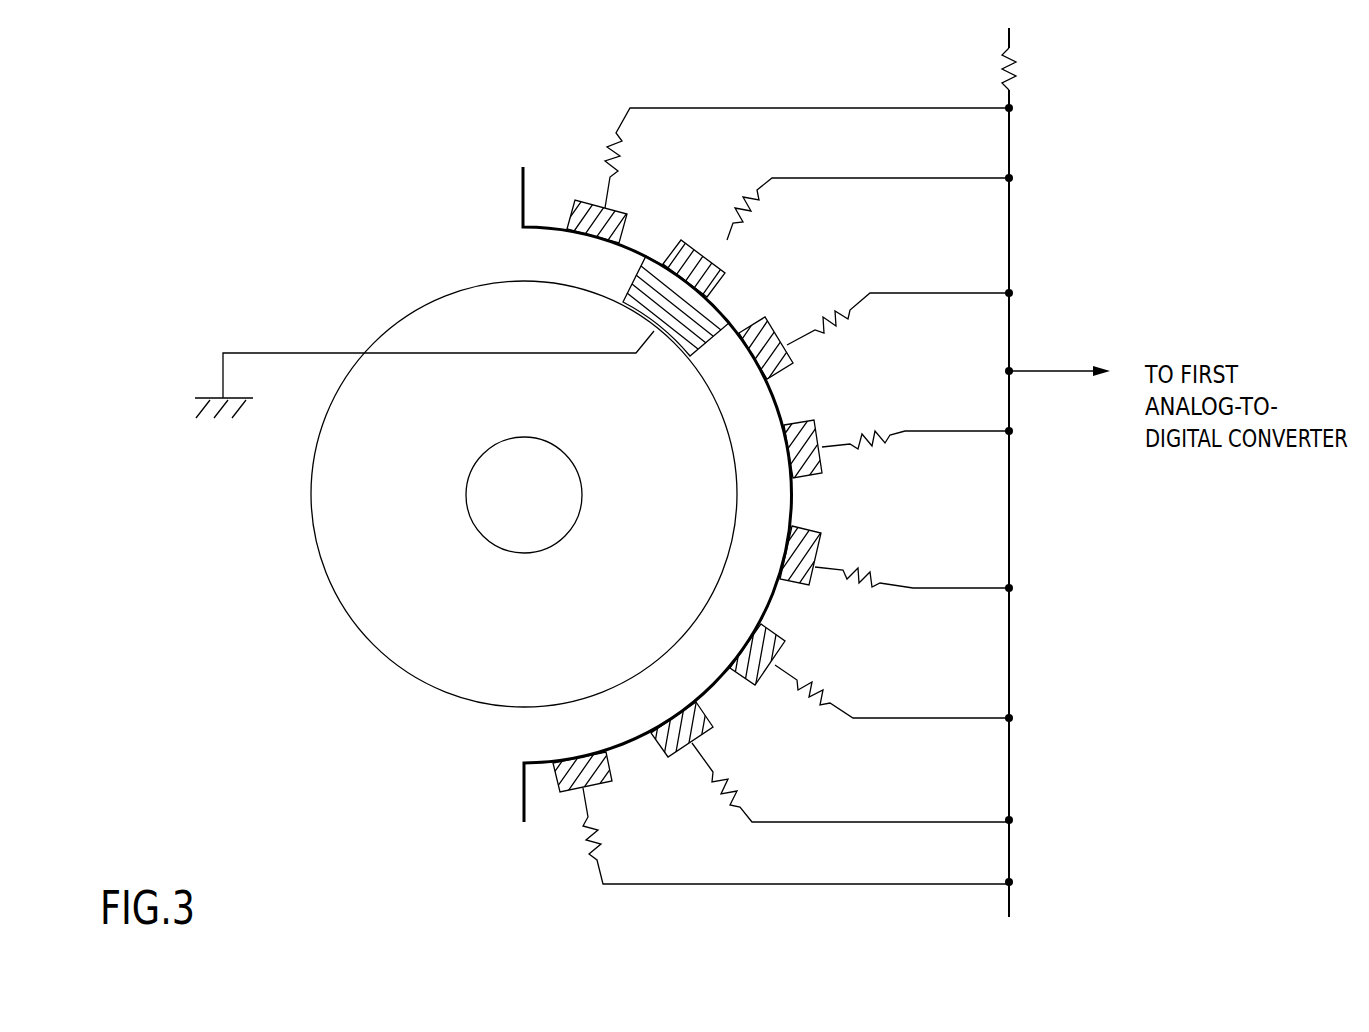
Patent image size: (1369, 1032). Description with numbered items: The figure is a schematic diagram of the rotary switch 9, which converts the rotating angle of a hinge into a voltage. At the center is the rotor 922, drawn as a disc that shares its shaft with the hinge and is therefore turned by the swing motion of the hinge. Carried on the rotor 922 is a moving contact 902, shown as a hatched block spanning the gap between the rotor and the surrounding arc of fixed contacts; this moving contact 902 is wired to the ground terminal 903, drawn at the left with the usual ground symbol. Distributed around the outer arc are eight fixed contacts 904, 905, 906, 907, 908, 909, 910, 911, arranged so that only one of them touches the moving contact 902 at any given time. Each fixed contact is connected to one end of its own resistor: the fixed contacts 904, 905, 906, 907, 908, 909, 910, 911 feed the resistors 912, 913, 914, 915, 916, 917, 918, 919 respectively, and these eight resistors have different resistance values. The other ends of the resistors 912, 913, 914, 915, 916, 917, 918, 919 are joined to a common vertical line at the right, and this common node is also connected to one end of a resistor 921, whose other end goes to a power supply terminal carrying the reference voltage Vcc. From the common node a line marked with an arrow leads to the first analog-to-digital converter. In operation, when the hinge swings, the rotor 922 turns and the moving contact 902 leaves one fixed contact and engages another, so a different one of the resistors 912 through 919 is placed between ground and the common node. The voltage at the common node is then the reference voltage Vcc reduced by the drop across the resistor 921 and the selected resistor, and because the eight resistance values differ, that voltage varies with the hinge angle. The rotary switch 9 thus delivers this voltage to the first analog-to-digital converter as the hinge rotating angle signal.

The rotary switch 9 is at (258, 762).
The moving contact 902 is at (652, 282).
The ground terminal 903 is at (228, 396).
The fixed contact 904 is at (617, 218).
The fixed contact 905 is at (726, 268).
The fixed contact 906 is at (794, 366).
The fixed contact 907 is at (820, 472).
The fixed contact 908 is at (808, 583).
The fixed contact 909 is at (768, 681).
The fixed contact 910 is at (680, 750).
The fixed contact 911 is at (567, 792).
The resistor 912 is at (622, 152).
The resistor 913 is at (757, 216).
The resistor 914 is at (843, 322).
The resistor 915 is at (882, 443).
The resistor 916 is at (877, 587).
The resistor 917 is at (815, 703).
The resistor 918 is at (725, 797).
The resistor 919 is at (588, 848).
The resistor 921 is at (1013, 66).
The rotor 922 is at (391, 661).